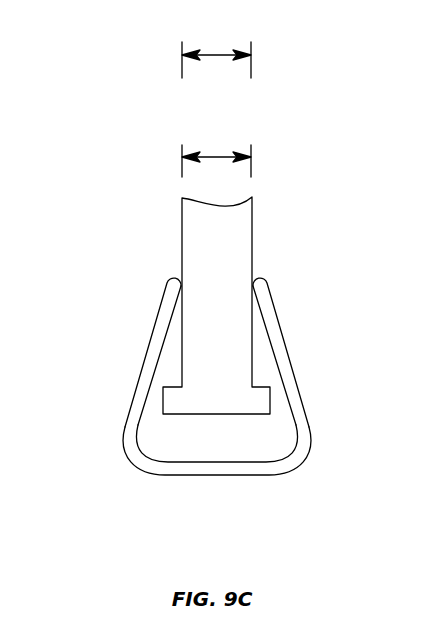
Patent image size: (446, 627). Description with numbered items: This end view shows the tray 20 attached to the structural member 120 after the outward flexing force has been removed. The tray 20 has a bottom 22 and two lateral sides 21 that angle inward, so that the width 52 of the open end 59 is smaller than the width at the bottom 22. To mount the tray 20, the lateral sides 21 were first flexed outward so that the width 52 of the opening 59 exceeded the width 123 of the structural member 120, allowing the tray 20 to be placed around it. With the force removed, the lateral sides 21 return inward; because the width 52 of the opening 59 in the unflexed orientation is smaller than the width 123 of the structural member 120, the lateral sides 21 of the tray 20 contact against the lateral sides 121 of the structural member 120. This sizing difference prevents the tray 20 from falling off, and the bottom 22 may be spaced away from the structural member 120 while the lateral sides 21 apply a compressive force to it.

The tray 20 is at (194, 405).
The lateral sides 21 is at (216, 352).
The bottom 22 is at (190, 477).
The open end 59 is at (257, 327).
The structural member 120 is at (210, 268).
The lateral sides of the structural member 121 is at (182, 343).
The width of the structural member 123 is at (215, 55).
The width of the open end 52 is at (220, 157).